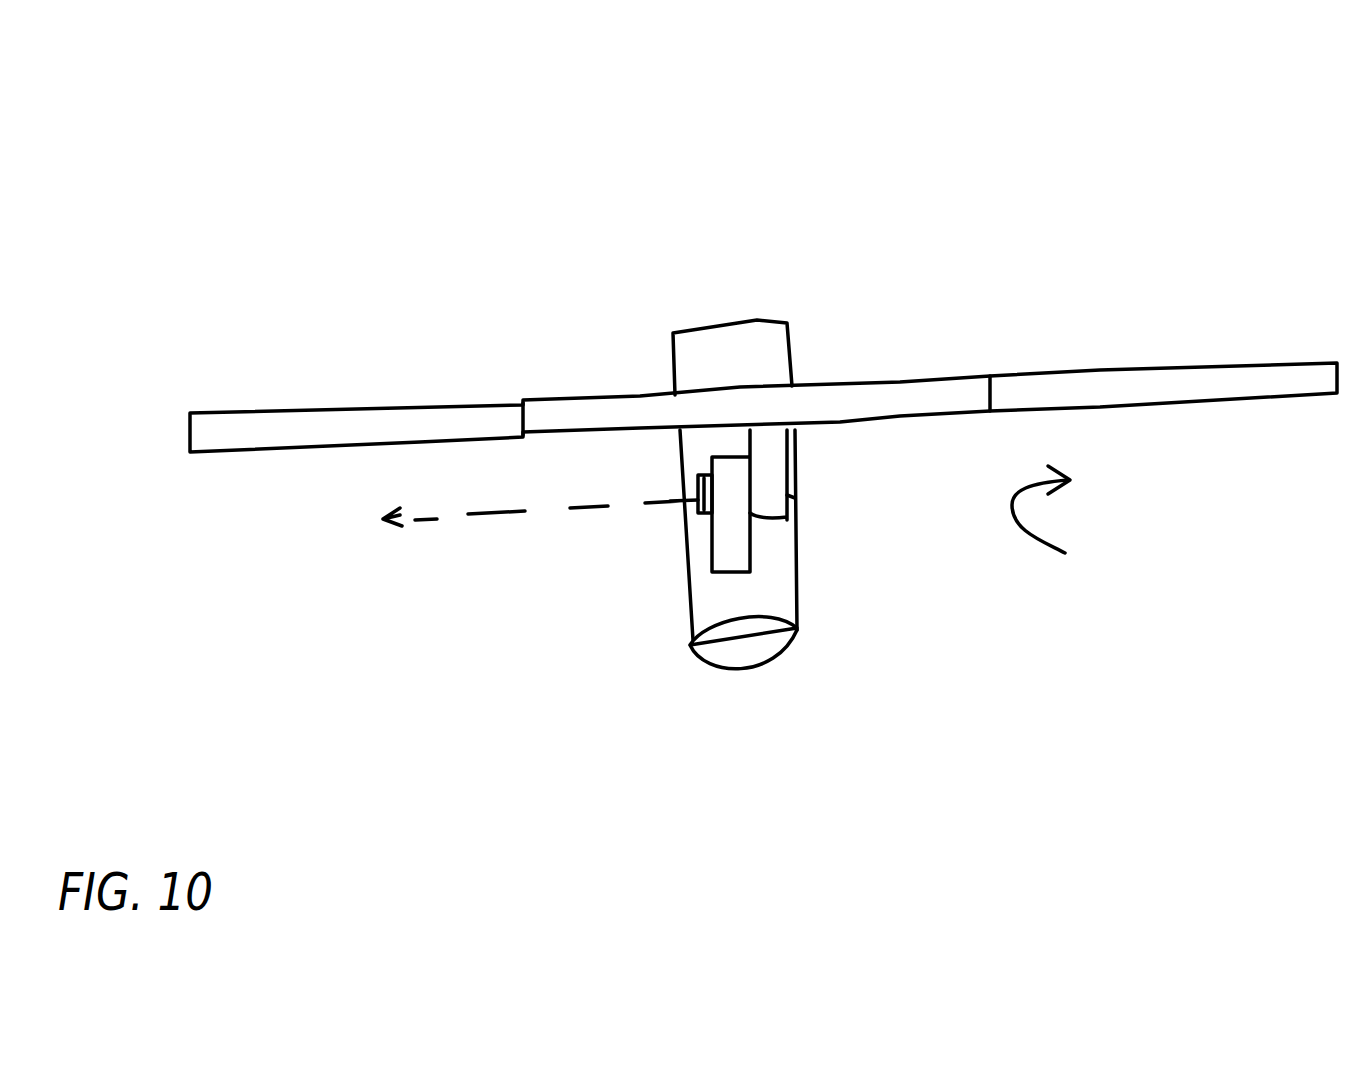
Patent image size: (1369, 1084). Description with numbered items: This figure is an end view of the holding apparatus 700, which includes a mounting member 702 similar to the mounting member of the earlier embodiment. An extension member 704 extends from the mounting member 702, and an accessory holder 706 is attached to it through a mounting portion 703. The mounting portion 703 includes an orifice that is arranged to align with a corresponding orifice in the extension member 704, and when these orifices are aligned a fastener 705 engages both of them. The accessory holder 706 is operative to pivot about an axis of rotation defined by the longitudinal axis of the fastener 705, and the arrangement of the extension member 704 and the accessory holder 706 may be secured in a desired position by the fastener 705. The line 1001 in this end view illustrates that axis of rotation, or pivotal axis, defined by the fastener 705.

The holding apparatus 700 is at (1120, 148).
The mounting member 702 is at (897, 383).
The mounting portion 703 is at (730, 547).
The extension member 704 is at (795, 498).
The fastener 705 is at (960, 492).
The accessory holder 706 is at (757, 320).
The line 1001 is at (1084, 523).